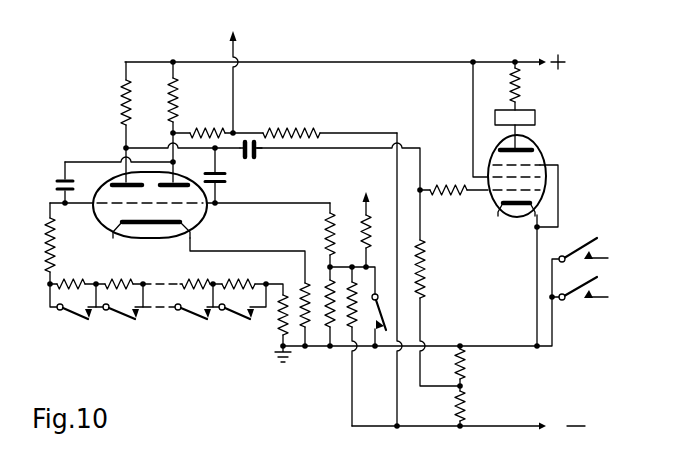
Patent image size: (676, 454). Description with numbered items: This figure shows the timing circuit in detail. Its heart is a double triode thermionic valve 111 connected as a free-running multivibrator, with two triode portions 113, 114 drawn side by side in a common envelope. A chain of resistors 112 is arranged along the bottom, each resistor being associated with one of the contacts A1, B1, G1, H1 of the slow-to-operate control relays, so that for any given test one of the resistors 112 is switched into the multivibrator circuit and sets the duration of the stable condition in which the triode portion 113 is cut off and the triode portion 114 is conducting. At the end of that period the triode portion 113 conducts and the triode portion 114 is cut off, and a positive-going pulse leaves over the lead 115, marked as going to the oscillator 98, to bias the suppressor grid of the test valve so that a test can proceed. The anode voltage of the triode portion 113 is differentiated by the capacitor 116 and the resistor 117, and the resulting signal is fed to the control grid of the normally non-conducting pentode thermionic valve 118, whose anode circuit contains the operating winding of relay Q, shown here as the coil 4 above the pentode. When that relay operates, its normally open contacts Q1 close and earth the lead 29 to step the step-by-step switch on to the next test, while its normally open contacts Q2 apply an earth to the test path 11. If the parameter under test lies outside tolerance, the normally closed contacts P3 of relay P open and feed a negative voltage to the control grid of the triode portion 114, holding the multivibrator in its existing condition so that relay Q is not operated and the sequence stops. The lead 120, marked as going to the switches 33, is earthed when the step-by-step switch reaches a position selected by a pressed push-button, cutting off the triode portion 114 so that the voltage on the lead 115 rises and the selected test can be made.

The oscillator 98 is at (247, 72).
The change-over switch 33 is at (336, 192).
The double triode thermionic valve 111 is at (105, 231).
The resistors 112 is at (165, 275).
The triode portion 113 is at (107, 210).
The triode portion 114 is at (200, 225).
The lead 115 is at (233, 92).
The capacitor 116 is at (251, 164).
The resistor 117 is at (437, 288).
The pentode thermionic valve 118 is at (489, 204).
The lead 120 is at (366, 212).
The relay 4 is at (535, 117).
The lead 29 is at (597, 258).
The test path 11 is at (598, 297).
The normally open contacts Q1 is at (593, 240).
The normally open contacts Q2 is at (594, 283).
The normally closed contacts P3 is at (383, 317).
The contact of control relay A A1 is at (76, 312).
The contact of control relay B B1 is at (119, 312).
The contact of control relay G G1 is at (194, 312).
The contact of control relay H H1 is at (239, 312).